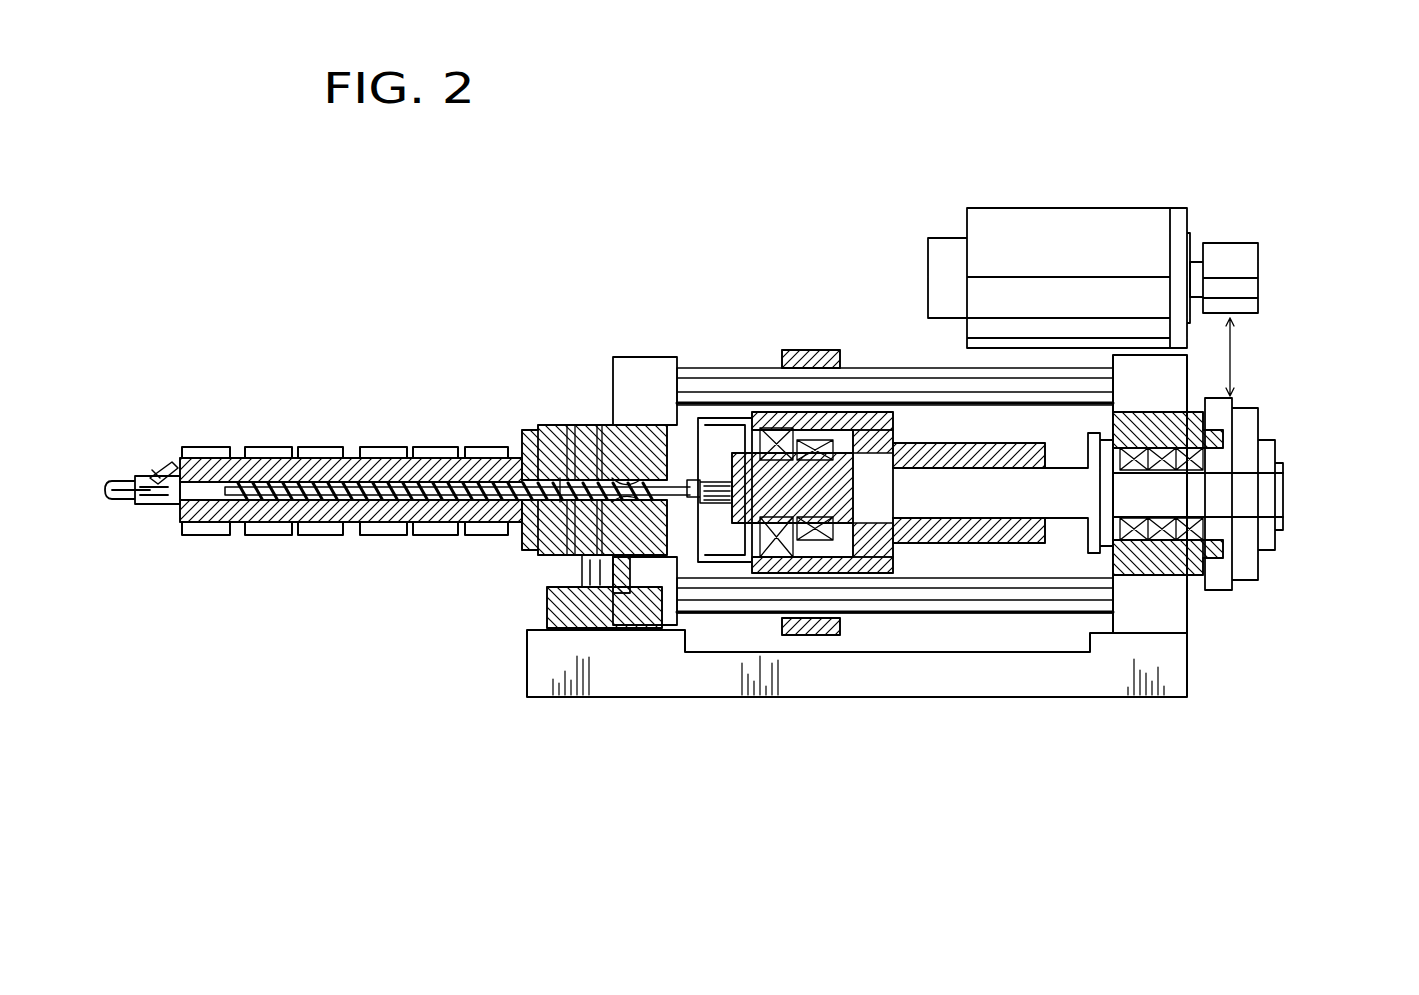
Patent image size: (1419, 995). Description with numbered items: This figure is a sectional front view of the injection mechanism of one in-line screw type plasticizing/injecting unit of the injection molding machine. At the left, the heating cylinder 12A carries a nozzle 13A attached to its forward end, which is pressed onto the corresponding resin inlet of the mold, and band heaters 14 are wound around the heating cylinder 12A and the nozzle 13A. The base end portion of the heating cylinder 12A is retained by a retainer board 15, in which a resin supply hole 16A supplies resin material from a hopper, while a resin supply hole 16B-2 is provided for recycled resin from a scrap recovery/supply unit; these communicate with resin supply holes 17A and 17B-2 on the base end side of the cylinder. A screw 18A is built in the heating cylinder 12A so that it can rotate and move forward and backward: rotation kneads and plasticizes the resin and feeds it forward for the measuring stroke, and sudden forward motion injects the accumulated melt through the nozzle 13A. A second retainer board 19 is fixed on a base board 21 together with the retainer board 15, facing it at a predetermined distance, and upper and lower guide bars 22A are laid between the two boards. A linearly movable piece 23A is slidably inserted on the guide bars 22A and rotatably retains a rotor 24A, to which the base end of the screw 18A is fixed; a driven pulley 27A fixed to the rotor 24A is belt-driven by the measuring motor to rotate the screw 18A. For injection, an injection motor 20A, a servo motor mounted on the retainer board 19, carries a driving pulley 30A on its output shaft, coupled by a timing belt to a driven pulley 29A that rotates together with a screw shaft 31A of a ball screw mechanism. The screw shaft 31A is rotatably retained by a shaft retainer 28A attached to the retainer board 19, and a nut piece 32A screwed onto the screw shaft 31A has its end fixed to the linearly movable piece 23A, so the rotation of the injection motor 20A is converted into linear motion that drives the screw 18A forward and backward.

The heating cylinder 12A is at (242, 455).
The nozzle 13A is at (110, 500).
The band heaters 14 is at (315, 447).
The retainer board 15 is at (547, 610).
The resin supply hole 16A is at (550, 428).
The resin supply hole 16B-2 is at (590, 428).
The resin supply hole 17A is at (535, 478).
The resin supply hole 17B-2 is at (625, 478).
The screw 18A is at (352, 525).
The retainer board 19 is at (1158, 620).
The injection motor 20A is at (1062, 208).
The base board 21 is at (1172, 687).
The guide bars 22A is at (905, 368).
The linearly movable piece 23A is at (800, 350).
The rotor 24A is at (700, 560).
The driven pulley 27A is at (730, 418).
The shaft retainer 28A is at (1160, 567).
The driven pulley 29A is at (1315, 376).
The driving pulley 30A is at (1230, 243).
The screw shaft 31A is at (1070, 500).
The nut piece 32A is at (1000, 545).